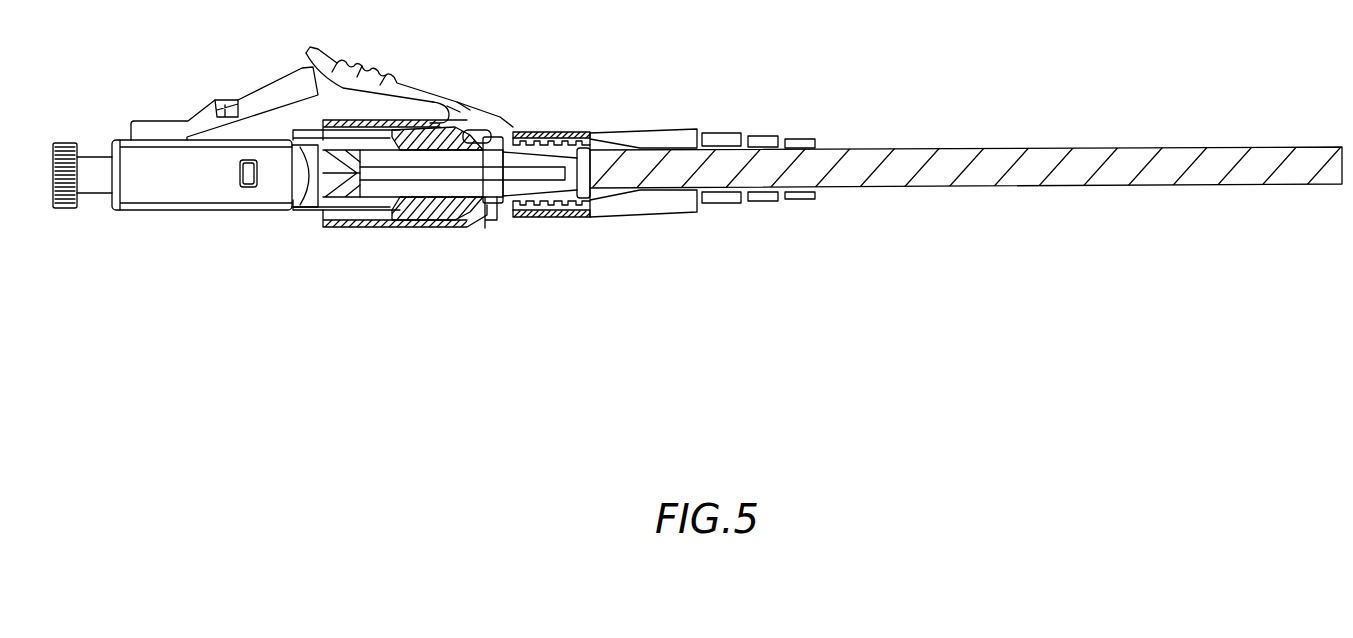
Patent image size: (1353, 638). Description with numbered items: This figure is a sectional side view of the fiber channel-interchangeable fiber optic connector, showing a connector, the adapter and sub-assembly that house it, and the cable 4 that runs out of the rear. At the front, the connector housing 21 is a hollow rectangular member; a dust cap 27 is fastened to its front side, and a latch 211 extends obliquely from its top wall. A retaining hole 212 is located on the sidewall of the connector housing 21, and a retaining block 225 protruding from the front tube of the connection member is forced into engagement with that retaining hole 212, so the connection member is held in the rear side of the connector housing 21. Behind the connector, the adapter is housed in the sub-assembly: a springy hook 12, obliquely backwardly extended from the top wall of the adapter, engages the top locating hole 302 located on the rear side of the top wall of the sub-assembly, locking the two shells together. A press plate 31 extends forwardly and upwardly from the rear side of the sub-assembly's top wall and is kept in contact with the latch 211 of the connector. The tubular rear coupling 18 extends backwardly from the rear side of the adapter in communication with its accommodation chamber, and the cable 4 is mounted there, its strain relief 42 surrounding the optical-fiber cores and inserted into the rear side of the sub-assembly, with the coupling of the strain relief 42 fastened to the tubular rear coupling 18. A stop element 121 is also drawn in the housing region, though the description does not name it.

The cable 4 is at (990, 160).
The springy hook 12 is at (470, 128).
The tubular rear coupling 18 is at (553, 133).
The connector housing 21 is at (133, 183).
The dust cap 27 is at (90, 170).
The press plate 31 is at (377, 83).
The strain relief 42 is at (730, 138).
The housing stop block 121 is at (487, 200).
The latch 211 is at (263, 95).
The retaining hole 212 is at (240, 187).
The retaining block 225 is at (253, 173).
The top locating hole 302 is at (455, 120).